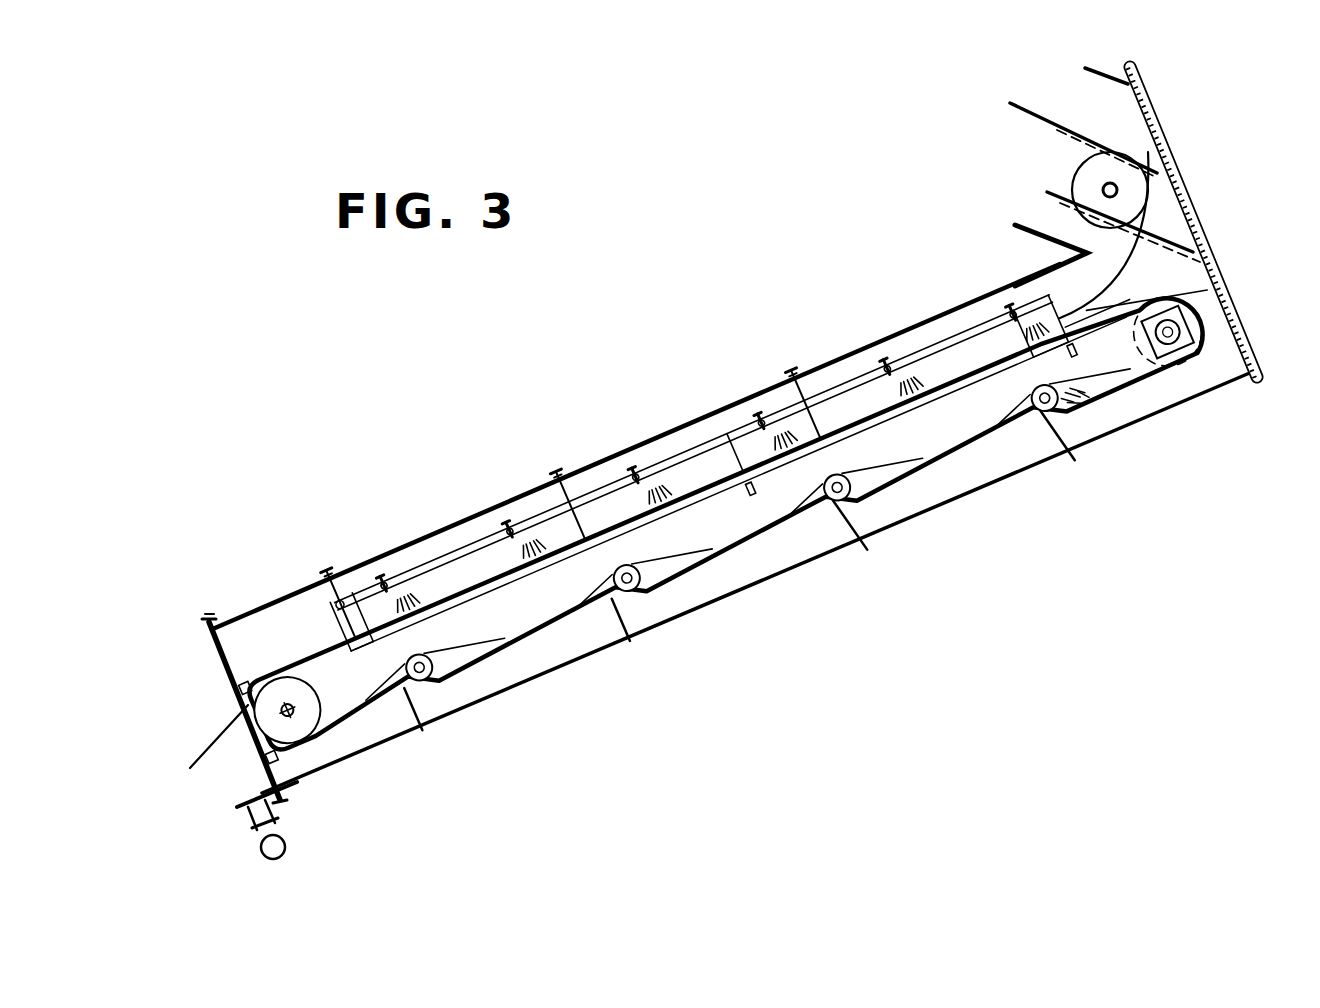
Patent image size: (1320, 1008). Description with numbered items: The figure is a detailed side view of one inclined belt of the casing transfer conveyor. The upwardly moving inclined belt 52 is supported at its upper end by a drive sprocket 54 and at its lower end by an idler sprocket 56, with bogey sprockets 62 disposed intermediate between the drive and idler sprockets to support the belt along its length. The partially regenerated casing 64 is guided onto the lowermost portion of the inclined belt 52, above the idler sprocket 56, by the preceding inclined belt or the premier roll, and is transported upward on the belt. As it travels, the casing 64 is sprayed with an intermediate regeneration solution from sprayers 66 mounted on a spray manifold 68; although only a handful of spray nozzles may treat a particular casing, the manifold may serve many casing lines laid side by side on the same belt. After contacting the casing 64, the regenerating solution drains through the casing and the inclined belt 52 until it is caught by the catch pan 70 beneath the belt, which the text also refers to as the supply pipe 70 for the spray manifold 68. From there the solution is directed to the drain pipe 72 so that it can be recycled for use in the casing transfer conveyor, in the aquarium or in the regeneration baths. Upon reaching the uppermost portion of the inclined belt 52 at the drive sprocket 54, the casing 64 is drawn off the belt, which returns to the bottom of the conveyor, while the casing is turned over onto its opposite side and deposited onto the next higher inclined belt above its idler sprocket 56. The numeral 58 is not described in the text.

The inclined belt 52 is at (959, 430).
The drive sprocket 54 is at (1197, 362).
The idler sprocket 56 is at (303, 752).
The upper frame rail 58 is at (850, 356).
The bogey sprockets 62 is at (837, 500).
The casing 64 is at (1033, 108).
The sprayers 66 is at (633, 480).
The spray manifold 68 is at (744, 478).
The catch pan 70 is at (333, 603).
The drain pipe 72 is at (285, 857).